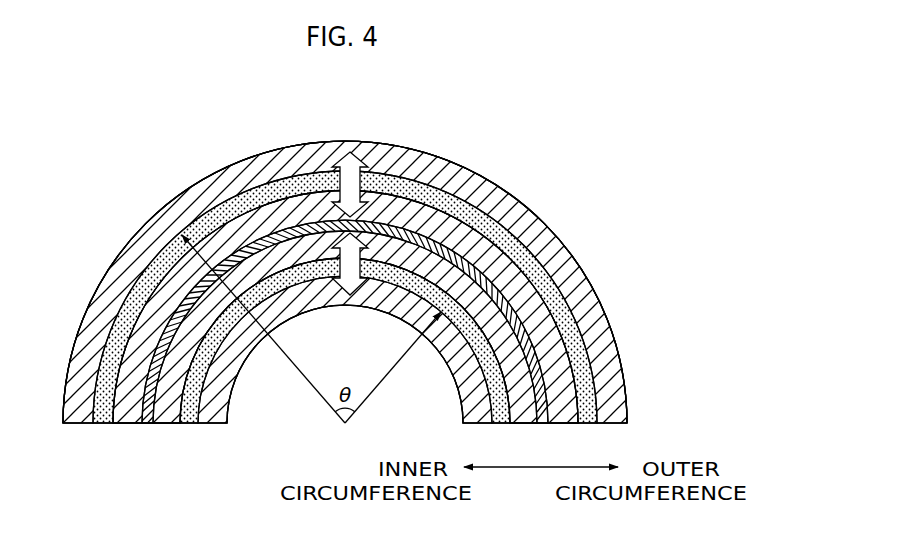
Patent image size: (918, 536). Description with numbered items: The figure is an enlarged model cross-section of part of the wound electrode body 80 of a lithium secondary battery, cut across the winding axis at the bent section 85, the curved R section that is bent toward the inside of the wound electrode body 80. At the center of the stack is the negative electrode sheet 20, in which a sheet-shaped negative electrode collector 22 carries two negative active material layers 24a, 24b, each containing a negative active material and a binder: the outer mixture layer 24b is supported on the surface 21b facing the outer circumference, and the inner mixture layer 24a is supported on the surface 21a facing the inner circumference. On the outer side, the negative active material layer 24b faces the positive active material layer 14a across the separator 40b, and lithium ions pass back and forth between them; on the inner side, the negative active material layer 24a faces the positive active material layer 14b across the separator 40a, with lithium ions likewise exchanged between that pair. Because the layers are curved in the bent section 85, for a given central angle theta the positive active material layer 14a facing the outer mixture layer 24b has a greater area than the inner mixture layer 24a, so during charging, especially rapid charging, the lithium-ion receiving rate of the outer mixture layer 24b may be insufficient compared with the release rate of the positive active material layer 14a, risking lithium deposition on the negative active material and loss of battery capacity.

The wound electrode body 80 is at (118, 168).
The bent section 85 is at (217, 163).
The positive active material layer 14a is at (410, 152).
The positive active material layer 14b is at (382, 305).
The negative electrode sheet 20 is at (462, 115).
The negative active material layer 24a is at (469, 237).
The negative active material layer 24b is at (508, 229).
The negative electrode collector 22 is at (460, 262).
The surface facing the inner circumference 21a is at (463, 390).
The surface facing the outer circumference 21b is at (533, 245).
The separator 40a is at (458, 338).
The separator 40b is at (557, 278).